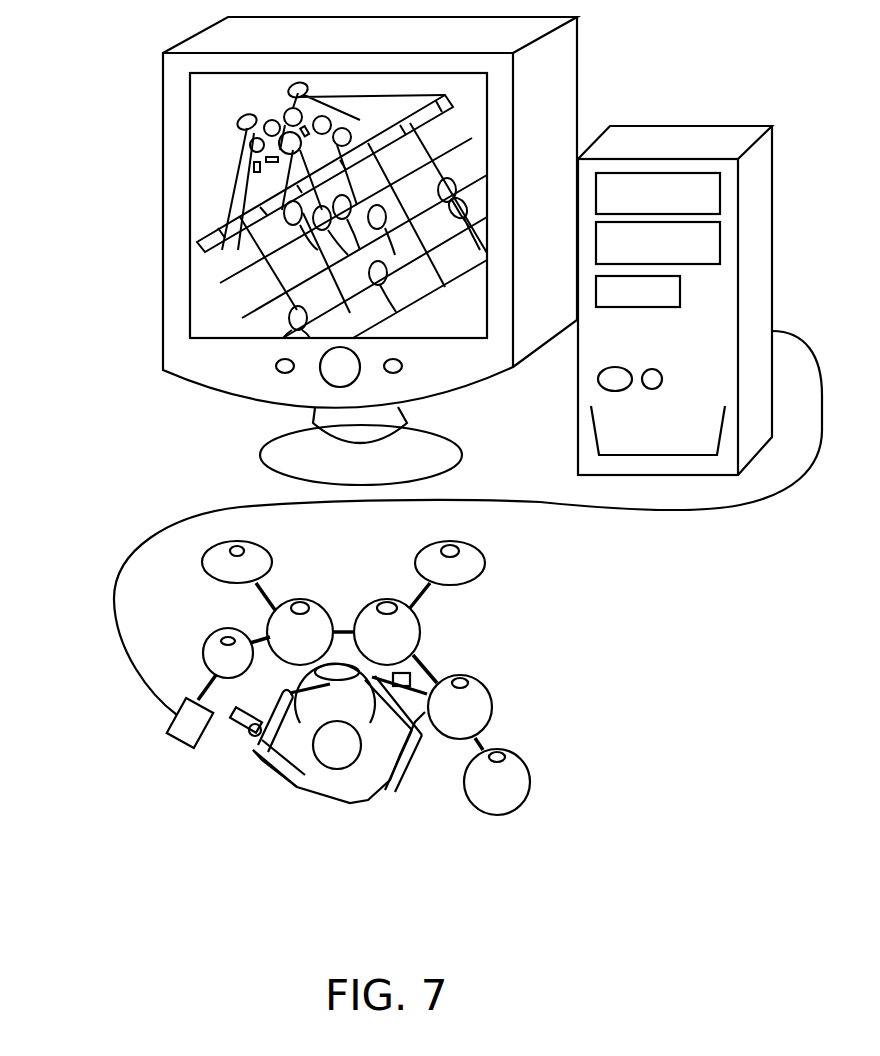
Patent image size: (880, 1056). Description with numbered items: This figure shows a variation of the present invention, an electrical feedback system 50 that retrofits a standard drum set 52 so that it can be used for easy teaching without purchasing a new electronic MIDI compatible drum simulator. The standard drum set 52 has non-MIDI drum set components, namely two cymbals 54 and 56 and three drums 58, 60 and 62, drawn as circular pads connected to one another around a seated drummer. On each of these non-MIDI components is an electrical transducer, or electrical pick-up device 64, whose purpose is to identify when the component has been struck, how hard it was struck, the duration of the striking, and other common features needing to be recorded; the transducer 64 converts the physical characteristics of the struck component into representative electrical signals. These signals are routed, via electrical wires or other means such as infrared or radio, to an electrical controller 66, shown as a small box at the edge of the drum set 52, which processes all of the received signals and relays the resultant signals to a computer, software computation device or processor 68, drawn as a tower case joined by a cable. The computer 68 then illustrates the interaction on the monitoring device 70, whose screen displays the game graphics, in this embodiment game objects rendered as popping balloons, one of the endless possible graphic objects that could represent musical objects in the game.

The electrical feedback system 50 is at (170, 452).
The standard drum set 52 is at (127, 733).
The cymbal 54 is at (478, 563).
The cymbal 56 is at (263, 560).
The drum 58 is at (410, 624).
The drum 60 is at (318, 614).
The drum 62 is at (483, 695).
The electrical pick-up device 64 is at (292, 608).
The electrical controller 66 is at (190, 750).
The computer 68 is at (690, 138).
The monitoring device 70 is at (163, 170).